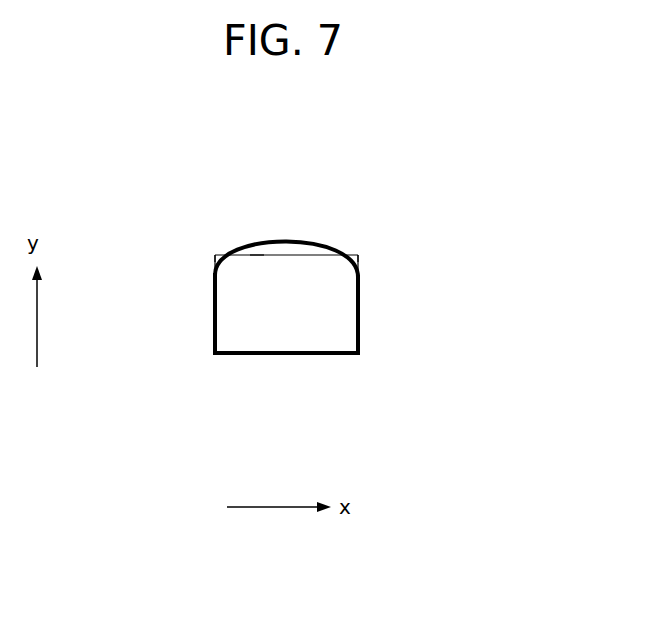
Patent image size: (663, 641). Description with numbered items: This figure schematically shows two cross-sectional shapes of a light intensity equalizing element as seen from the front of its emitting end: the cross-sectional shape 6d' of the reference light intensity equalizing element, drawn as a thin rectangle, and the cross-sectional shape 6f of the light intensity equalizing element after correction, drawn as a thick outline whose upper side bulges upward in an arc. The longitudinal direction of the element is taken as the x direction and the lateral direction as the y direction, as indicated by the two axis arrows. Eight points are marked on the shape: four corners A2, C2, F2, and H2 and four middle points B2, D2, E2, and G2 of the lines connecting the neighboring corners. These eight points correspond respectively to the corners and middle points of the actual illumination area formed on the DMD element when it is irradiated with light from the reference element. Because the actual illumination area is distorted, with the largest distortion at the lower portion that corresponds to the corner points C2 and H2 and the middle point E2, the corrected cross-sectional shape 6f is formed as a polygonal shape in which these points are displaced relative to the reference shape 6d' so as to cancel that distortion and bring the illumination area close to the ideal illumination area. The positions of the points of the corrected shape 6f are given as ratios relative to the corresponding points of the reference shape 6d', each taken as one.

The corner point A2 is at (215, 355).
The middle point B2 is at (215, 300).
The corner point C2 is at (215, 255).
The middle point D2 is at (285, 355).
The middle point E2 is at (283, 241).
The corner point F2 is at (360, 355).
The middle point G2 is at (360, 300).
The corner point H2 is at (358, 255).
The cross-sectional shape of the reference light intensity equalizing element 6d' is at (252, 208).
The cross-sectional shape of the light intensity equalizing element after correction 6f is at (318, 241).